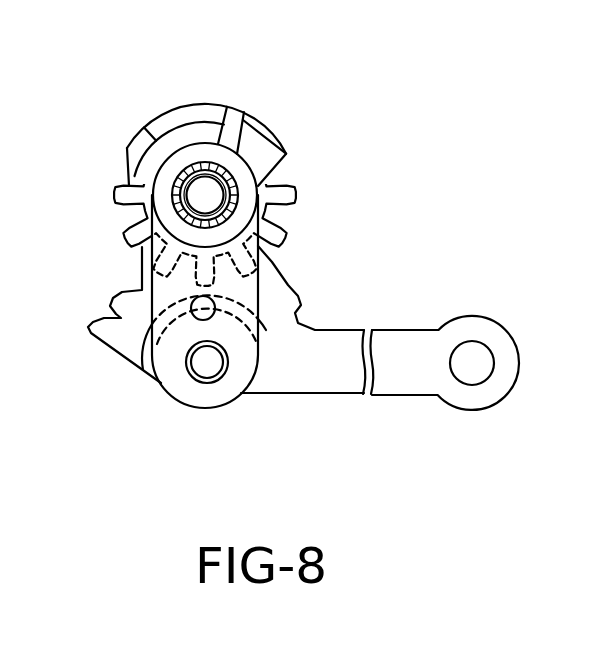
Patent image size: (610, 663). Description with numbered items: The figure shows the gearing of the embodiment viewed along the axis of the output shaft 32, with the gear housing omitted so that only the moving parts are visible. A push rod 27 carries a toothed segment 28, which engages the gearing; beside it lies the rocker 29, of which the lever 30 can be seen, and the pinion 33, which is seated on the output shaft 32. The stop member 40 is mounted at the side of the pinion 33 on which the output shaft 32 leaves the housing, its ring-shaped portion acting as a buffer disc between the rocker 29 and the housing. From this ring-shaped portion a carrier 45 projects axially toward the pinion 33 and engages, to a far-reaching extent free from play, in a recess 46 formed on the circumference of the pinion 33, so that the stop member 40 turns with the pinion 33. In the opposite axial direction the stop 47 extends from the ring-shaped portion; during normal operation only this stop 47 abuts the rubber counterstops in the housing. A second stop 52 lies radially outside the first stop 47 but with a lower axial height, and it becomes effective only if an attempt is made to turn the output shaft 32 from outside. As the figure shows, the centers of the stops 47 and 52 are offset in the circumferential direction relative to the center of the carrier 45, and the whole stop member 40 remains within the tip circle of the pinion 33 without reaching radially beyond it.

The push rod 27 is at (398, 390).
The toothed segment 28 is at (113, 335).
The rocker 29 is at (282, 259).
The lever 30 is at (160, 375).
The output shaft 32 is at (210, 195).
The pinion 33 is at (127, 232).
The stop member 40 is at (181, 96).
The carrier 45 is at (236, 118).
The recess 46 is at (245, 120).
The stop 47 is at (141, 182).
The second stop 52 is at (163, 129).